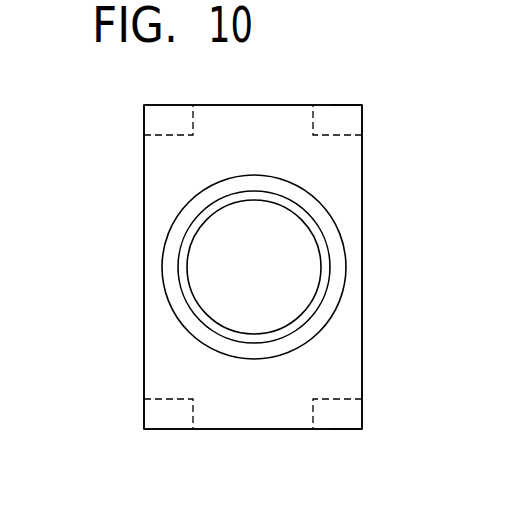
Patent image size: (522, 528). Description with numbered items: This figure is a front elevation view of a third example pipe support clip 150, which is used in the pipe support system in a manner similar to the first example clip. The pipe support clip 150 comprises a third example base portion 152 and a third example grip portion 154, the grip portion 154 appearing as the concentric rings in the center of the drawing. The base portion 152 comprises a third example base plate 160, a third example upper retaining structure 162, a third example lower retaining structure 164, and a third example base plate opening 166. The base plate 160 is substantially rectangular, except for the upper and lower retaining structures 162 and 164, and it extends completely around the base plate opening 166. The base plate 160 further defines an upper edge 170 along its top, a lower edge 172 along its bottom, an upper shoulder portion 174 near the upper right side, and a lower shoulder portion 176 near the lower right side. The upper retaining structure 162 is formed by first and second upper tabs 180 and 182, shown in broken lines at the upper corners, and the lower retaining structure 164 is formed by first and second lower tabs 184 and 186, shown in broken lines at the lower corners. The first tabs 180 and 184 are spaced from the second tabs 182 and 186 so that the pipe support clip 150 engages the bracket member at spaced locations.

The third example pipe support clip 150 is at (106, 167).
The third example base portion 152 is at (142, 215).
The third example grip portion 154 is at (160, 258).
The third example base plate 160 is at (342, 187).
The third example upper retaining structure 162 is at (346, 104).
The third example lower retaining structure 164 is at (347, 430).
The third example base plate opening 166 is at (271, 279).
The upper edge 170 is at (271, 105).
The lower edge 172 is at (270, 430).
The upper shoulder portion 174 is at (362, 152).
The lower shoulder portion 176 is at (362, 390).
The first upper tab 180 is at (145, 122).
The second upper tab 182 is at (361, 122).
The first lower tab 184 is at (146, 412).
The second lower tab 186 is at (355, 411).